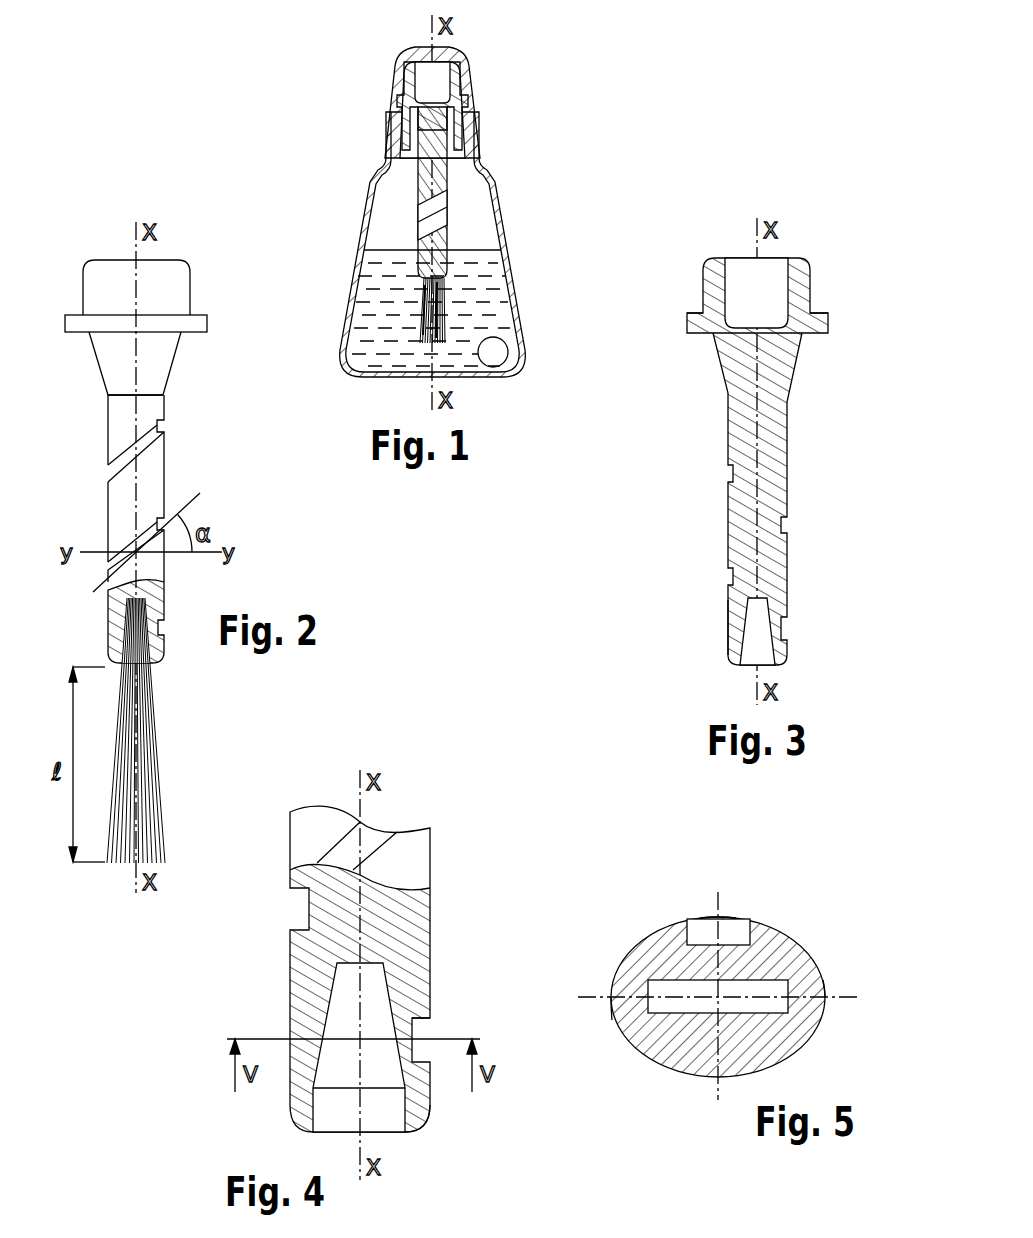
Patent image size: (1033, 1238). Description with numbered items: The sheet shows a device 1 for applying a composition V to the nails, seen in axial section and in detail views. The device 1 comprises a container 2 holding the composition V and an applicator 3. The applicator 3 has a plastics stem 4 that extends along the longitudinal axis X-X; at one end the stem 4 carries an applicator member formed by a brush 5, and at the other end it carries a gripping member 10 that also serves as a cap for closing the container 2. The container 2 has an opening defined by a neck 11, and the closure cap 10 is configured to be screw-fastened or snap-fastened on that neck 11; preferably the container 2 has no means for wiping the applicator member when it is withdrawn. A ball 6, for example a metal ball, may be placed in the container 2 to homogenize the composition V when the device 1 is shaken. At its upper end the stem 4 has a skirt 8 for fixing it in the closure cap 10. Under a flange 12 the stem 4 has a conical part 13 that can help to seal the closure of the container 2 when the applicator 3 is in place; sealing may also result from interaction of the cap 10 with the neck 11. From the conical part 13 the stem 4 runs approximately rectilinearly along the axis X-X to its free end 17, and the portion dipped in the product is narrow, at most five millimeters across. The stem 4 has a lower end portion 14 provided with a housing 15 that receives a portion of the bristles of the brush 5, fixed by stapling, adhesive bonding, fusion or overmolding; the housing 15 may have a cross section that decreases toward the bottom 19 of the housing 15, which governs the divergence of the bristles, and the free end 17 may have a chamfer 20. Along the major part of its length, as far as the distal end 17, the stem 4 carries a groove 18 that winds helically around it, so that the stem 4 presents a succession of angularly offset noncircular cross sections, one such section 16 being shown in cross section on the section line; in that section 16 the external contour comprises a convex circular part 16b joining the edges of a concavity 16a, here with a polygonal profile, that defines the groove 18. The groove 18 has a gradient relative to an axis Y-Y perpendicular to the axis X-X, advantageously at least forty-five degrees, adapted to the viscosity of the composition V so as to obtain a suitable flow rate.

In FIG. 1, the device 1 is at (330, 142).
In FIG. 1, the container 2 is at (500, 192).
In FIG. 1, the applicator 3 is at (410, 62).
In FIG. 1, the stem 4 is at (413, 210).
In FIG. 2, the stem 4 is at (113, 353).
In FIG. 3, the stem 4 is at (747, 417).
In FIG. 1, the brush 5 is at (445, 310).
In FIG. 2, the brush 5 is at (145, 803).
In FIG. 1, the ball 6 is at (493, 352).
In FIG. 3, the skirt 8 is at (703, 280).
In FIG. 1, the gripping member 10 is at (473, 88).
In FIG. 1, the neck 11 is at (388, 127).
In FIG. 3, the flange 12 is at (690, 325).
In FIG. 2, the conical part 13 is at (153, 352).
In FIG. 3, the conical part 13 is at (737, 352).
In FIG. 2, the lower end portion 14 is at (112, 630).
In FIG. 3, the lower end portion 14 is at (733, 630).
In FIG. 4, the lower end portion 14 is at (318, 947).
In FIG. 3, the housing 15 is at (762, 628).
In FIG. 4, the housing 15 is at (372, 1017).
In FIG. 5, the housing 15 is at (683, 988).
In FIG. 5, the end face 16 is at (612, 1000).
In FIG. 5, the concavity 16a is at (762, 938).
In FIG. 5, the convex circular part 16b is at (828, 985).
In FIG. 2, the free end 17 is at (160, 663).
In FIG. 2, the groove 18 is at (147, 537).
In FIG. 4, the groove 18 is at (372, 840).
In FIG. 5, the groove 18 is at (705, 930).
In FIG. 4, the bottom 19 is at (383, 942).
In FIG. 4, the chamfer 20 is at (410, 1132).
In FIG. 1, the composition V is at (388, 287).